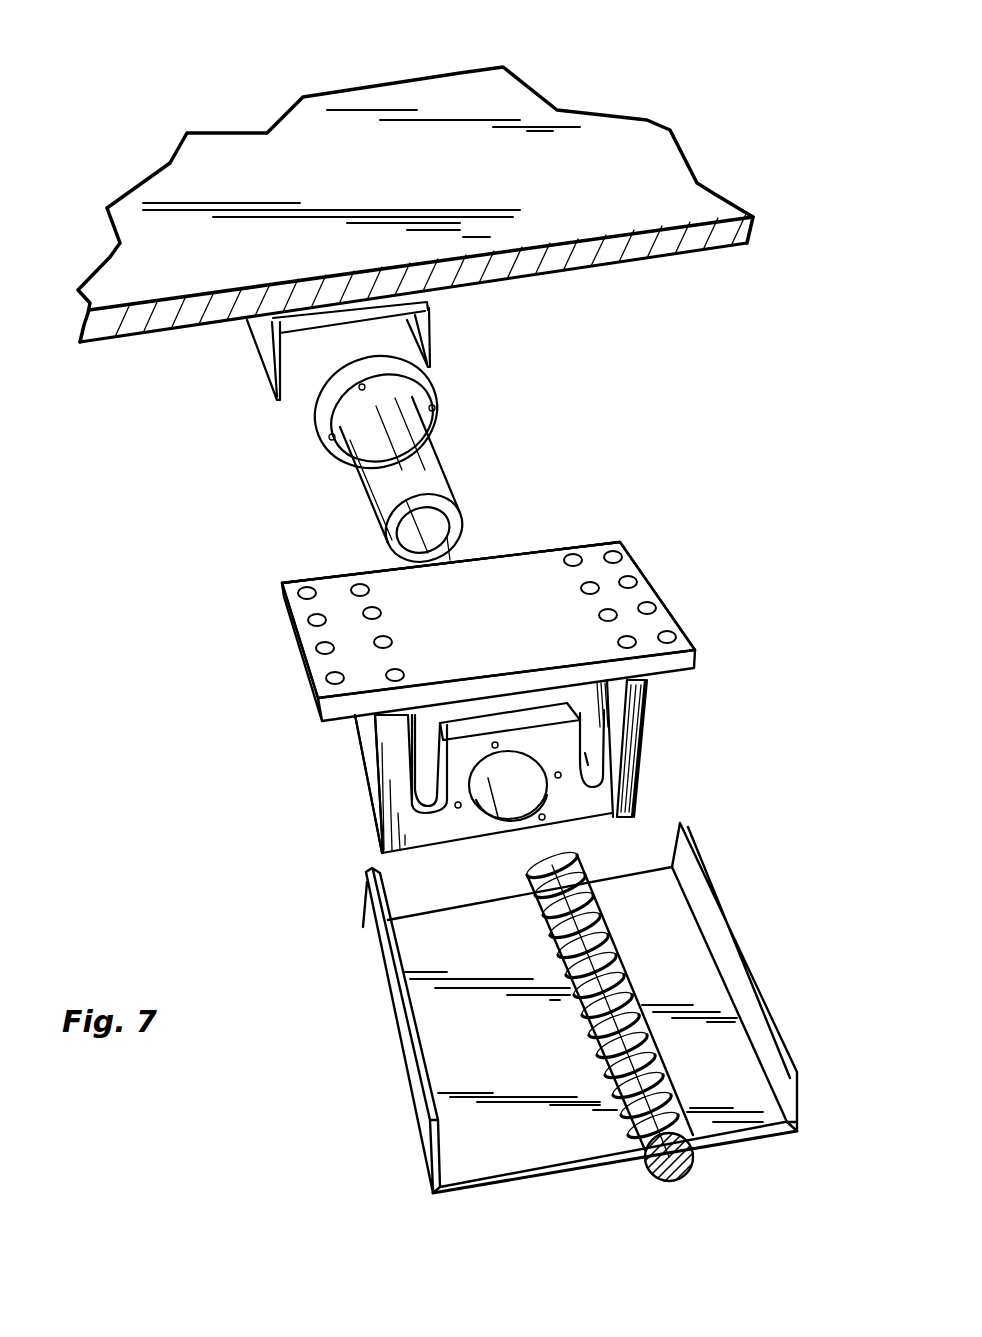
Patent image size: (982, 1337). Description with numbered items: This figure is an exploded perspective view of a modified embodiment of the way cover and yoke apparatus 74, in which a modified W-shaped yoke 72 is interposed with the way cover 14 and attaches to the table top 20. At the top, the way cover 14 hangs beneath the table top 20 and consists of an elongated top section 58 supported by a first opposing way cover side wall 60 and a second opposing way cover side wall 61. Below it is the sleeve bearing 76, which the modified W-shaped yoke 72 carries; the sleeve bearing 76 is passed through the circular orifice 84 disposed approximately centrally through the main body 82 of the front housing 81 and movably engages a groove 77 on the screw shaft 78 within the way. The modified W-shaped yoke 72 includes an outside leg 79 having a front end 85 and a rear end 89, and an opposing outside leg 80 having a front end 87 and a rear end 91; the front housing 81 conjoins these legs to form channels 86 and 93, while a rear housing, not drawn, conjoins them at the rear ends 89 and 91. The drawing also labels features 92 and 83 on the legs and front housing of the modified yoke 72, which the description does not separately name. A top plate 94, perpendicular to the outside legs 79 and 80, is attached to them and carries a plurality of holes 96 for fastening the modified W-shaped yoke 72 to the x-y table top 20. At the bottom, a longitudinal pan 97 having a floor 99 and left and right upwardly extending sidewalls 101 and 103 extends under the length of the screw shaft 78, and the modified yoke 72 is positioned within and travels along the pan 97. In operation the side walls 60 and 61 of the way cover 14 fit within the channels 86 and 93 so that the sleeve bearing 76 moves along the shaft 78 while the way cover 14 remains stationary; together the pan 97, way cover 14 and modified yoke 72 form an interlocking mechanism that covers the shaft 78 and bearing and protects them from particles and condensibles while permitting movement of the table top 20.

The table top 20 is at (707, 203).
The way cover 14 is at (437, 296).
The elongated top section 58 is at (307, 322).
The first opposing way cover side wall 60 is at (260, 340).
The second opposing way cover side wall 61 is at (433, 340).
The sleeve bearing 76 is at (418, 453).
The rear end 89 is at (303, 577).
The top plate 94 is at (513, 573).
The rear end 91 is at (592, 542).
The holes 96 is at (370, 589).
The modified W-shaped yoke 72 is at (657, 560).
The way cover and modified W-shaped yoke apparatus 74 is at (683, 623).
The main body 82 is at (458, 750).
The front end 87 is at (645, 692).
The opposing outside leg 80 is at (640, 725).
The front housing 81 is at (632, 783).
The front end 85 is at (380, 740).
The outside leg 79 is at (380, 792).
The slot 92 is at (382, 845).
The channel 86 is at (427, 783).
The circular orifice 84 is at (505, 783).
The U-shaped slot 83 is at (563, 800).
The channel 93 is at (613, 812).
The groove 77 is at (550, 918).
The screw shaft 78 is at (607, 932).
The right upwardly extending sidewall 103 is at (743, 990).
The left upwardly extending sidewall 101 is at (423, 1085).
The longitudinal pan 97 is at (530, 1130).
The floor 99 is at (577, 1145).